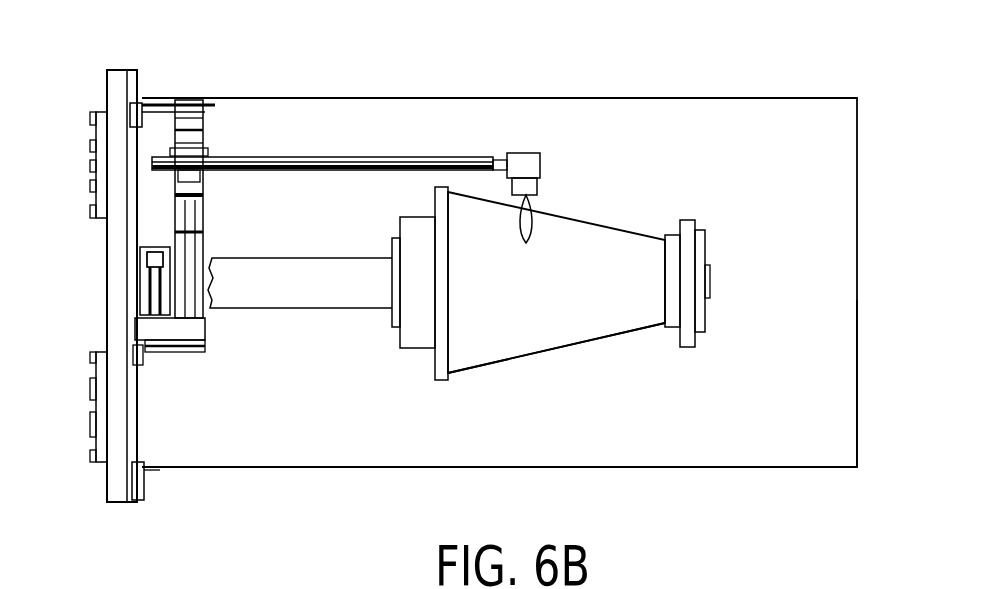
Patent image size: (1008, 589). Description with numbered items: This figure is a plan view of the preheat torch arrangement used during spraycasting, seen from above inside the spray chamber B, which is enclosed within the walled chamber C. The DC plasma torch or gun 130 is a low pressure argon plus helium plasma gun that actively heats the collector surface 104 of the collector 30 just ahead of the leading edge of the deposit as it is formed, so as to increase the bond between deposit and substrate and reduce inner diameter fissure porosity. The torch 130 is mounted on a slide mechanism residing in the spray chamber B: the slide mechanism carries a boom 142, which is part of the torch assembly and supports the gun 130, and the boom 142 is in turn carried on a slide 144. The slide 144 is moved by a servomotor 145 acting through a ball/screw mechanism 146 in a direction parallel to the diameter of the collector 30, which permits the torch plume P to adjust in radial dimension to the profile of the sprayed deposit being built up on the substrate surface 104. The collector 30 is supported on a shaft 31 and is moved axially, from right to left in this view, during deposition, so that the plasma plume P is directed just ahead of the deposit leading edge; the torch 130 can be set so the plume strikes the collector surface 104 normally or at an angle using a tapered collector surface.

The boom 142 is at (366, 158).
The DC plasma torch or gun 130 is at (547, 185).
The collector surface 104 is at (593, 222).
The slide 144 is at (203, 222).
The servomotor 145 is at (140, 258).
The ball/screw mechanism 146 is at (143, 282).
The shaft 31 is at (297, 303).
The torch plume P is at (531, 243).
The collector 30 is at (567, 357).
The spray chamber B is at (802, 386).
The walled chamber C is at (834, 96).